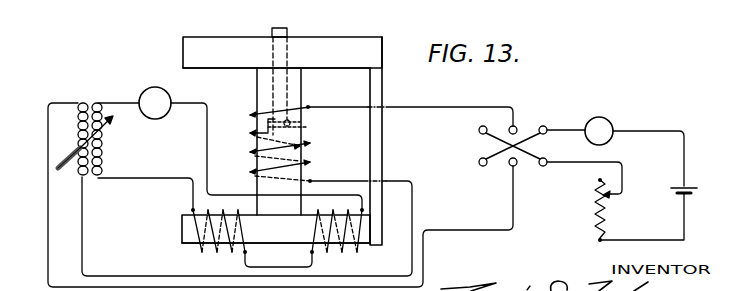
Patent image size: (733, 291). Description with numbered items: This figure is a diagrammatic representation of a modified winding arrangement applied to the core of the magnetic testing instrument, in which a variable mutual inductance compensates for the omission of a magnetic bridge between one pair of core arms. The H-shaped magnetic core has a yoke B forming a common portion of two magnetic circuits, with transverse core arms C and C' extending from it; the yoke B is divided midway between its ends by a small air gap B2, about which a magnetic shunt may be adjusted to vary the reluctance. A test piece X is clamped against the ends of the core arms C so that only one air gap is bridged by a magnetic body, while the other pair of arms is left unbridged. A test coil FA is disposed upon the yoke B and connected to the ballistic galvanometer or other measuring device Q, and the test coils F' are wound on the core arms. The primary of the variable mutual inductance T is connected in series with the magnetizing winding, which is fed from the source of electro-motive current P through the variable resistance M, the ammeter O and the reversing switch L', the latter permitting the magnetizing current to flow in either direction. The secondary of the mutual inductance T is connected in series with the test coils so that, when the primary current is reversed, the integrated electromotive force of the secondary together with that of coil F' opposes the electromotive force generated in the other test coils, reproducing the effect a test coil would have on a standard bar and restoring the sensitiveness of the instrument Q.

The core arm C' is at (262, 125).
The core arm C is at (278, 142).
The test piece X is at (383, 80).
The yoke B is at (257, 86).
The test coil FA is at (250, 132).
The air gap B2 is at (250, 151).
The test coil F' is at (277, 206).
The variable mutual inductance T is at (101, 152).
The galvanometer Q is at (156, 93).
The ammeter O is at (607, 121).
The reversing switch L' is at (513, 157).
The variable resistance M is at (597, 209).
The source of electro-motive current P is at (691, 191).